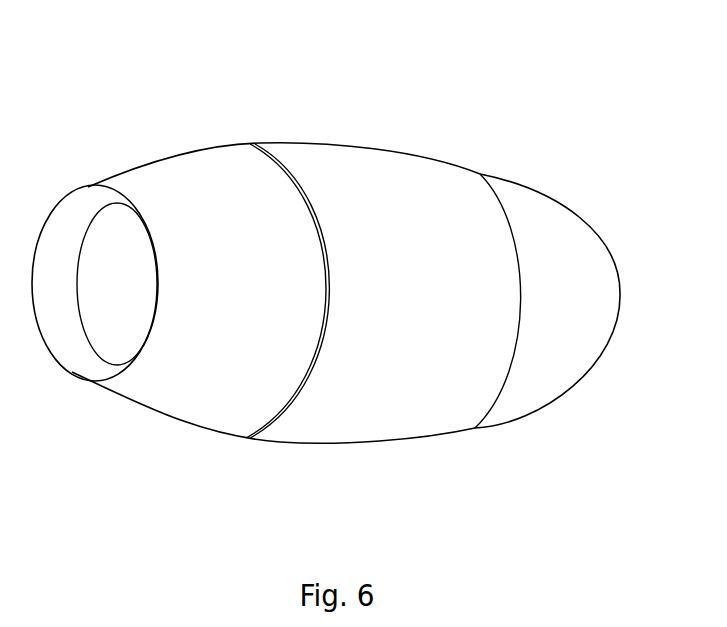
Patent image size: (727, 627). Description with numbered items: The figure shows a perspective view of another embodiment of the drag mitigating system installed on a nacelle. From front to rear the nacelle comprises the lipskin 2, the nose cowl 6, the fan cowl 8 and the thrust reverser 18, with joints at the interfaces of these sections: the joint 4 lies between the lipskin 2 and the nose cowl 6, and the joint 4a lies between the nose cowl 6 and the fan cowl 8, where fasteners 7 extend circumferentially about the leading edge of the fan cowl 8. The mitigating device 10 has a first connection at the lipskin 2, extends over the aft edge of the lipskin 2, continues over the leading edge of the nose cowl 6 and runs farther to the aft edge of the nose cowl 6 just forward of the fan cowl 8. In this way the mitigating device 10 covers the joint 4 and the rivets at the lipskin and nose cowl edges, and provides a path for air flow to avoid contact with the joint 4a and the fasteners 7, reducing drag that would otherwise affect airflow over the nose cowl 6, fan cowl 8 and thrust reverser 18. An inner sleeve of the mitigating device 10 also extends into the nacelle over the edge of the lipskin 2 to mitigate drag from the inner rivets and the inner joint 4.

The mitigating device 10 is at (105, 163).
The lipskin 2 is at (140, 157).
The joint 4 is at (262, 501).
The joint 4a is at (262, 446).
The nose cowl 6 is at (228, 125).
The fasteners 7 is at (268, 132).
The fan cowl 8 is at (398, 125).
The thrust reverser 18 is at (569, 173).